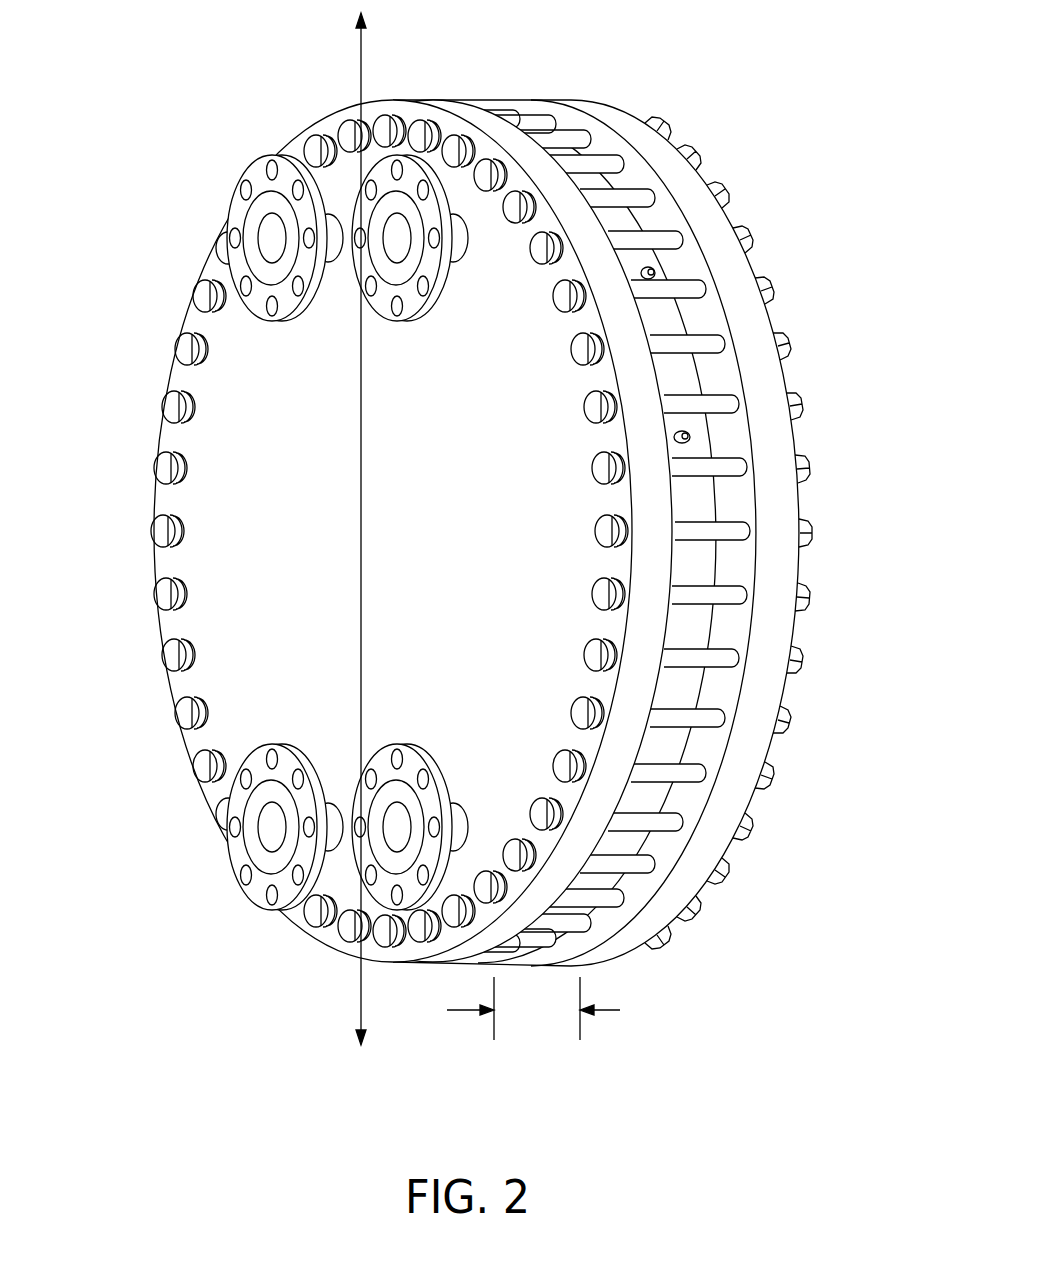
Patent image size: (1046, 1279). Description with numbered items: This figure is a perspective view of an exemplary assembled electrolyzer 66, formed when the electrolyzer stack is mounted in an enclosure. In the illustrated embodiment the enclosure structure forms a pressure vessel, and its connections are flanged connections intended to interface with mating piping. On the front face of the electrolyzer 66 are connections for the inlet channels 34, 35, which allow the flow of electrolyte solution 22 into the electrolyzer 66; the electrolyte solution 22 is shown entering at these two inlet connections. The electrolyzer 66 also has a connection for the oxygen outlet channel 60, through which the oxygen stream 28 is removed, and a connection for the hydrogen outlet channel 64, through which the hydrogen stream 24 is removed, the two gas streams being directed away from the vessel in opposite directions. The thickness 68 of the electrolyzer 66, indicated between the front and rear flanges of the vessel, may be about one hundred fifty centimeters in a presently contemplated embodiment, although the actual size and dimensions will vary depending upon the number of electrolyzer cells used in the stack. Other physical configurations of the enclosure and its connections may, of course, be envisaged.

The electrolyzer 66 is at (448, 555).
The hydrogen stream 24 is at (363, 62).
The oxygen stream 28 is at (360, 997).
The electrolyte solution 22 is at (226, 539).
The inlet channel 34 is at (272, 253).
The inlet channel 35 is at (272, 842).
The oxygen outlet channel 60 is at (397, 843).
The hydrogen outlet channel 64 is at (393, 250).
The thickness 68 is at (538, 1010).